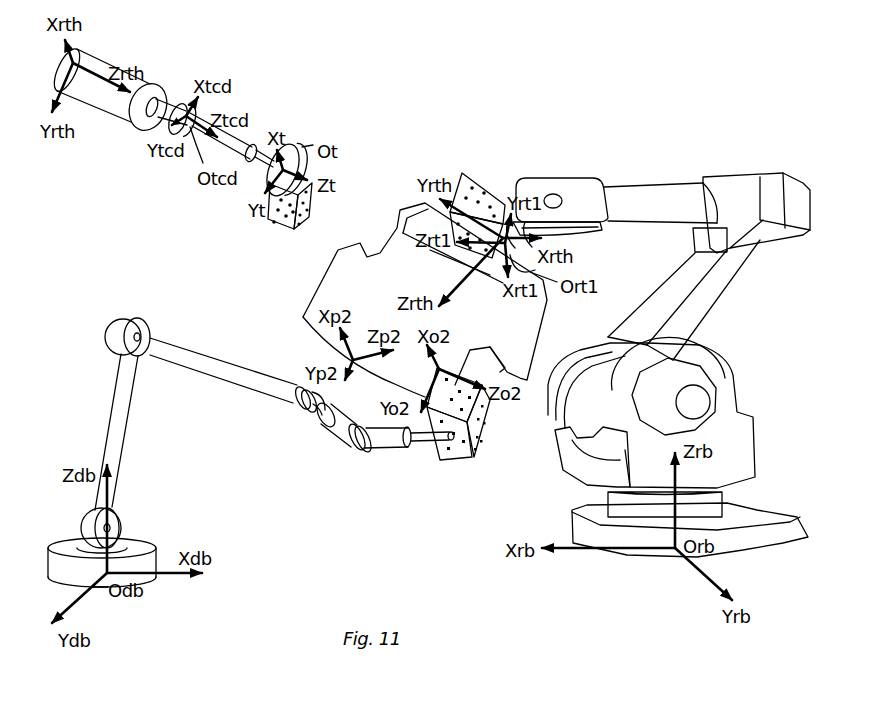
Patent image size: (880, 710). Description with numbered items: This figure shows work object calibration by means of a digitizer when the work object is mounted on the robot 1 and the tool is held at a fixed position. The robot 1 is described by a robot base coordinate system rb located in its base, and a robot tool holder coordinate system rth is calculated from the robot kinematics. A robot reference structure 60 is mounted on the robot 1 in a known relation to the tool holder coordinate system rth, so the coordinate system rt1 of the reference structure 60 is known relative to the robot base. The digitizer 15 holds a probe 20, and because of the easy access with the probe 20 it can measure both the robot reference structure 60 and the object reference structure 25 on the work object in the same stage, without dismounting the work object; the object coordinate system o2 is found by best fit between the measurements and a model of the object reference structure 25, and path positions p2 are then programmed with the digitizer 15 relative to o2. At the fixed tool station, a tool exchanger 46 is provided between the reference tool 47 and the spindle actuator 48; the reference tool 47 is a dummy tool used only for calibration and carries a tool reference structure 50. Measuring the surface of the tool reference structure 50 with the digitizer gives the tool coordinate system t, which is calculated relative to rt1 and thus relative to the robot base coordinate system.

The robot 1 is at (765, 335).
The digitizer 15 is at (91, 417).
The probe 20 is at (432, 444).
The object reference structure 25 is at (467, 457).
The tool exchanger 46 is at (183, 99).
The reference tool 47 is at (288, 143).
The spindle actuator 48 is at (90, 55).
The tool reference structure 50 is at (285, 229).
The robot reference structure 60 is at (470, 180).